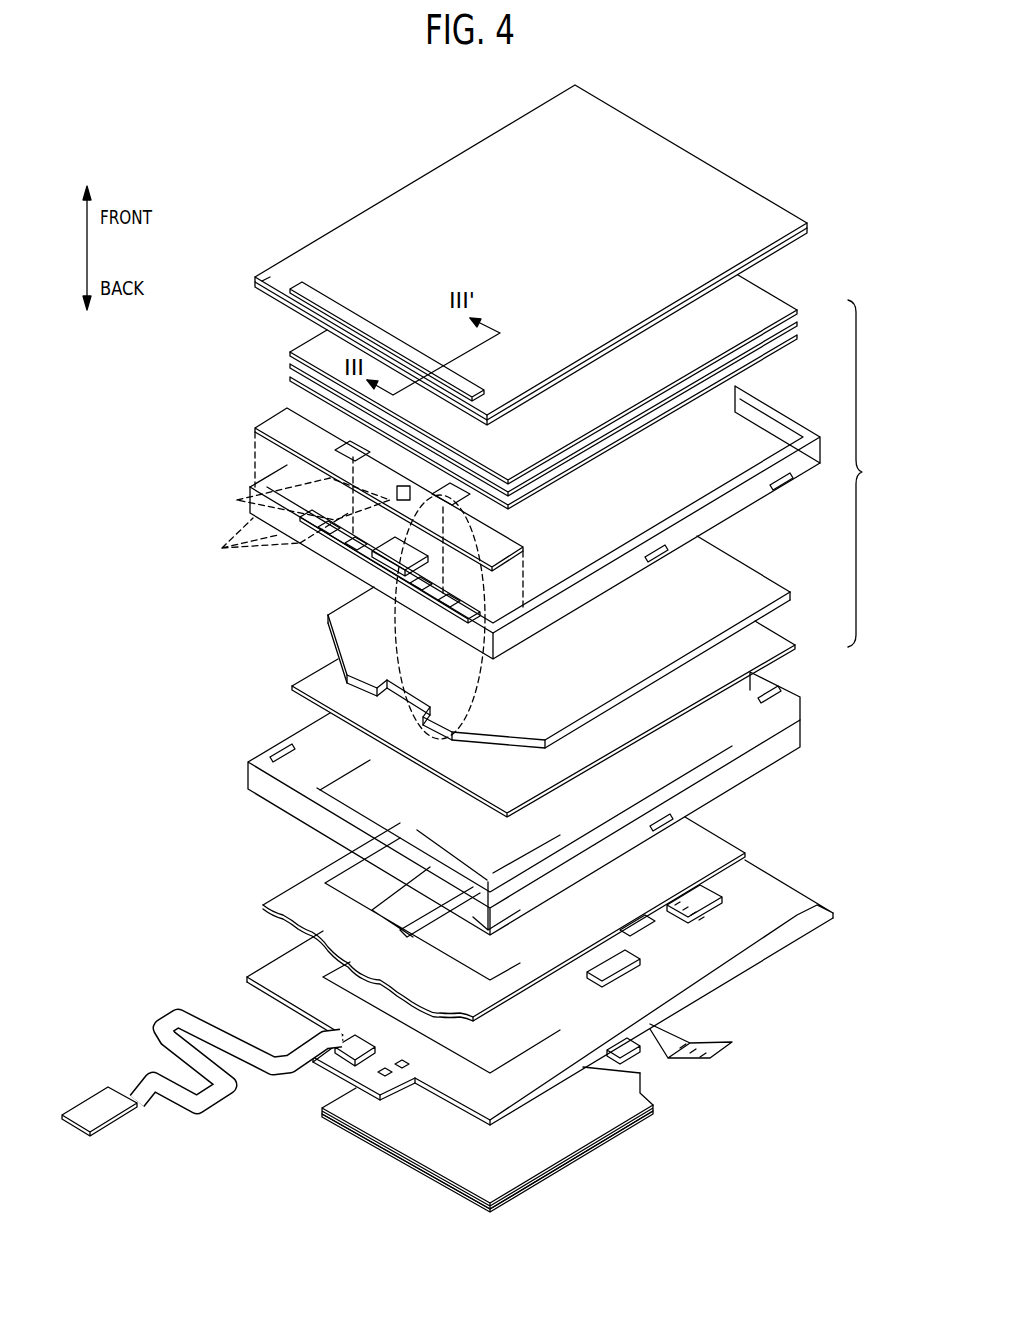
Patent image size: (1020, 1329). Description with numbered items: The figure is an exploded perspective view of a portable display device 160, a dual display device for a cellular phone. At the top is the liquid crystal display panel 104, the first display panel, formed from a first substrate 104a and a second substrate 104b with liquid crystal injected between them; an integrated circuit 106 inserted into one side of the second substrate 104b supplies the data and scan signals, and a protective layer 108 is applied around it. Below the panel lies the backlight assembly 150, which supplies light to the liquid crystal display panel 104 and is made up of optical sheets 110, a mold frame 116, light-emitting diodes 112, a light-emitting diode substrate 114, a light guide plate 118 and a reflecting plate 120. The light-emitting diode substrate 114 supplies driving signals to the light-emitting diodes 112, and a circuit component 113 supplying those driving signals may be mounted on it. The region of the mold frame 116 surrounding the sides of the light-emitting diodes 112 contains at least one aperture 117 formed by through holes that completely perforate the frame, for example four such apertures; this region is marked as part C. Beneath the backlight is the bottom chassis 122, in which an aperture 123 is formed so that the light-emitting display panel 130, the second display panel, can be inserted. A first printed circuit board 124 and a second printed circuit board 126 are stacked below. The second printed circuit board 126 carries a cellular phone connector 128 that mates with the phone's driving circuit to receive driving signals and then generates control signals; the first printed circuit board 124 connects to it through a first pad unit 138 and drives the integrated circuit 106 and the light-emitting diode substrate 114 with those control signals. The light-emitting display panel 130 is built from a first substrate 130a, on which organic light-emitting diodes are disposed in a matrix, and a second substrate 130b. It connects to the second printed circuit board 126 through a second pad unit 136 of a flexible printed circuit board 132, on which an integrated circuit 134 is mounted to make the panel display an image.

The portable display device 160 is at (266, 97).
The liquid crystal display panel 104 is at (548, 255).
The first substrate 104a is at (808, 224).
The second substrate 104b is at (812, 236).
The integrated circuit 106 is at (296, 279).
The protective layer 108 is at (268, 279).
The optical sheets 110 is at (283, 354).
The light-emitting diodes 112 is at (269, 535).
The circuit component 113 is at (255, 498).
The light-emitting diode substrate 114 is at (278, 423).
The mold frame 116 is at (790, 407).
The aperture 117 is at (330, 560).
The light guide plate 118 is at (345, 638).
The reflecting plate 120 is at (290, 688).
The bottom chassis 122 is at (795, 692).
The aperture 123 is at (328, 803).
The first printed circuit board 124 is at (283, 893).
The second printed circuit board 126 is at (270, 975).
The cellular phone connector 128 is at (110, 1115).
The light-emitting display panel 130 is at (509, 1139).
The first substrate 130a is at (650, 1106).
The second substrate 130b is at (610, 1142).
The flexible printed circuit board 132 is at (640, 1052).
The integrated circuit 134 is at (645, 1072).
The second pad unit 136 is at (728, 1042).
The first pad unit 138 is at (722, 900).
The backlight assembly 150 is at (875, 473).
The part C is at (405, 620).